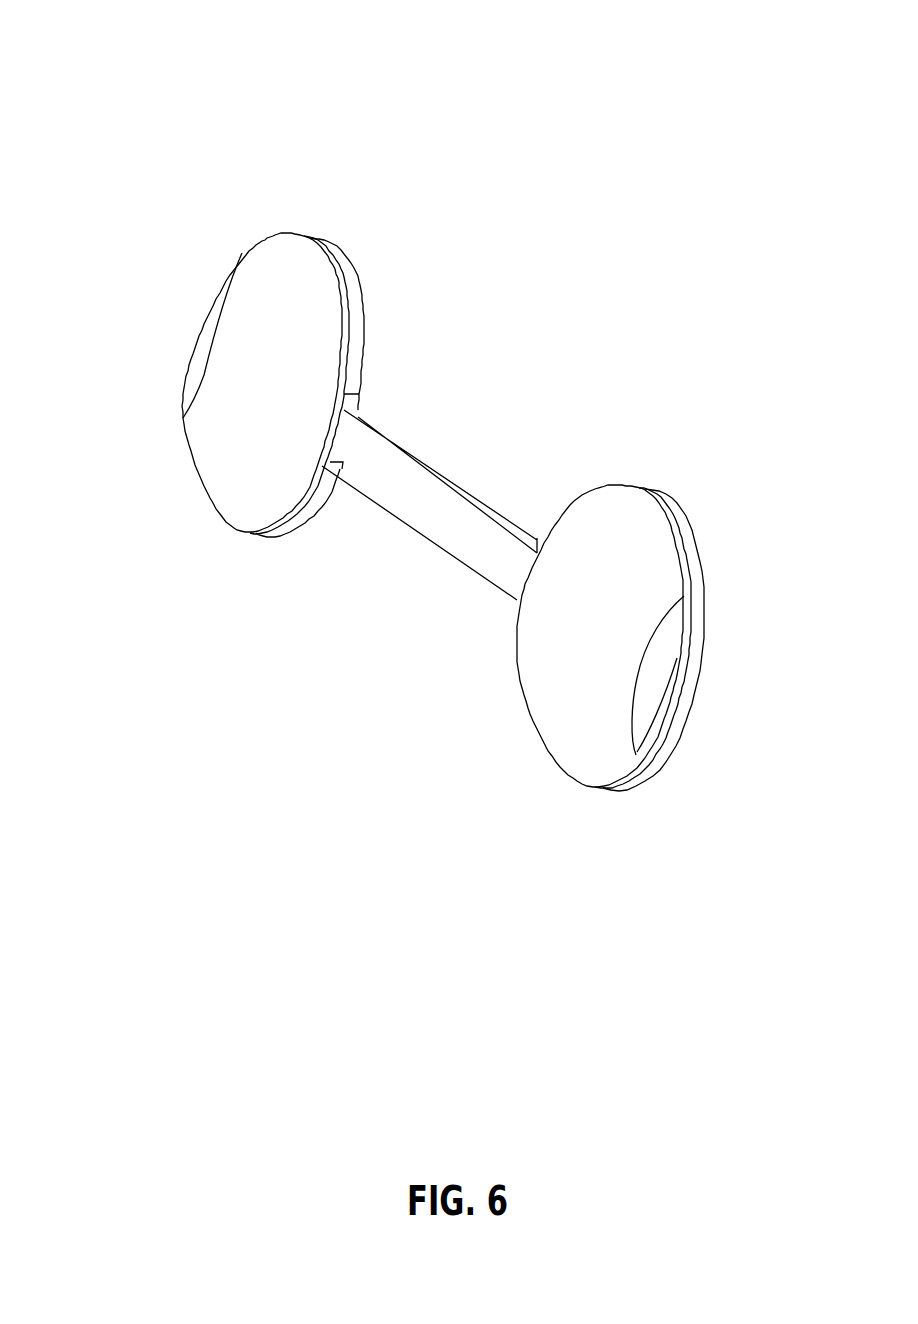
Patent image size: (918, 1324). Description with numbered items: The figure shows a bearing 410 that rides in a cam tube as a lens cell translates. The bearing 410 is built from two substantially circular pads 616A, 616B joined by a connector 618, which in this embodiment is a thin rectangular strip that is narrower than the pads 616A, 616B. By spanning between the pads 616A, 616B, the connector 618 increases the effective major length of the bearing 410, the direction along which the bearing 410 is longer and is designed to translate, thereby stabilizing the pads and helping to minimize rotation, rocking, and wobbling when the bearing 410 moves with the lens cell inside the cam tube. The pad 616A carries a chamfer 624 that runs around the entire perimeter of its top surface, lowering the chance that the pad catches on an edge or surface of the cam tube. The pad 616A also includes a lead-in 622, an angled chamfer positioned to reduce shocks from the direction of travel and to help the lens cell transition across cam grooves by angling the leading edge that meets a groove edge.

The bearing 410 is at (180, 128).
The pad 616A is at (592, 666).
The pad 616B is at (208, 515).
The connector 618 is at (452, 464).
The lead-in 622 is at (621, 679).
The chamfer 624 is at (675, 510).